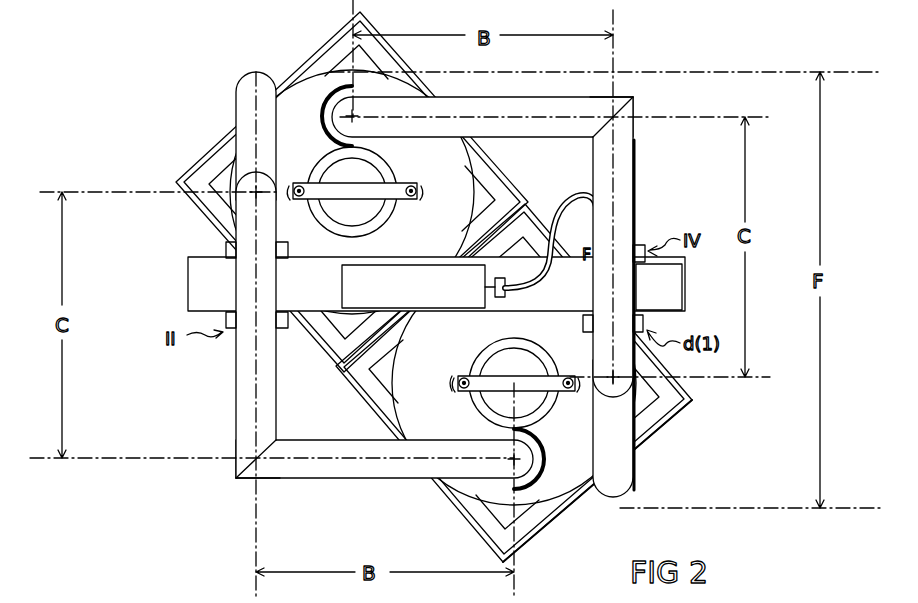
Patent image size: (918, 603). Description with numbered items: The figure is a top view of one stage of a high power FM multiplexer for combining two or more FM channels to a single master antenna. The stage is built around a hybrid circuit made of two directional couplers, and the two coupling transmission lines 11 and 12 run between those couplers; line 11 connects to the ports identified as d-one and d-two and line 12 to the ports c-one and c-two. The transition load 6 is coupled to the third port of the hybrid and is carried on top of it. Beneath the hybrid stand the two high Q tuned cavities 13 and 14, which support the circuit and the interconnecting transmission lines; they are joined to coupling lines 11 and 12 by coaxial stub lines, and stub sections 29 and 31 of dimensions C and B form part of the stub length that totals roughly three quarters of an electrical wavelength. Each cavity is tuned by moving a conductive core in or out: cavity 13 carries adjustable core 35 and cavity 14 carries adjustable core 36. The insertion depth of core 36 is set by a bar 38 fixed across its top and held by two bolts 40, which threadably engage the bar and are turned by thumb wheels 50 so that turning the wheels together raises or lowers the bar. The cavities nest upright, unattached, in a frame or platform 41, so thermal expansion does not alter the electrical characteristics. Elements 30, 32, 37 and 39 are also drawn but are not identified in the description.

The transition load 6 is at (382, 262).
The coupling transmission line 11 is at (658, 425).
The coupling transmission line 12 is at (236, 99).
The high Q tuned cavity 13 is at (322, 58).
The high Q tuned cavity 14 is at (352, 386).
The stub line section 29 is at (635, 209).
The lower left link bar 30 is at (236, 392).
The stub line section 31 is at (516, 137).
The lower link bar 32 is at (333, 480).
The adjustable core 35 is at (370, 176).
The adjustable core 36 is at (503, 368).
The upper clamp bar 37 is at (330, 178).
The bar 38 is at (548, 377).
The upper clamp screws 39 is at (358, 208).
The bolts 40 is at (505, 402).
The frame or platform 41 is at (173, 178).
The thumb wheels 50 is at (456, 381).